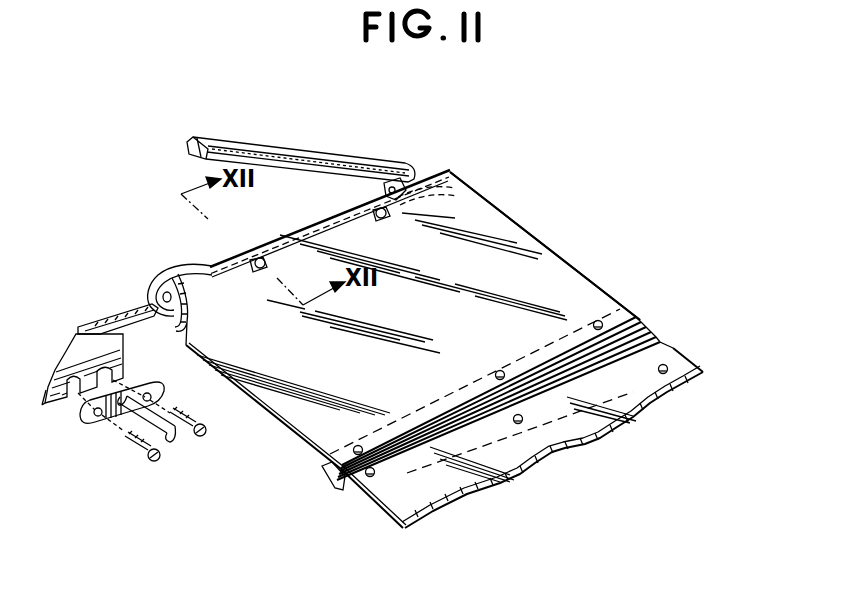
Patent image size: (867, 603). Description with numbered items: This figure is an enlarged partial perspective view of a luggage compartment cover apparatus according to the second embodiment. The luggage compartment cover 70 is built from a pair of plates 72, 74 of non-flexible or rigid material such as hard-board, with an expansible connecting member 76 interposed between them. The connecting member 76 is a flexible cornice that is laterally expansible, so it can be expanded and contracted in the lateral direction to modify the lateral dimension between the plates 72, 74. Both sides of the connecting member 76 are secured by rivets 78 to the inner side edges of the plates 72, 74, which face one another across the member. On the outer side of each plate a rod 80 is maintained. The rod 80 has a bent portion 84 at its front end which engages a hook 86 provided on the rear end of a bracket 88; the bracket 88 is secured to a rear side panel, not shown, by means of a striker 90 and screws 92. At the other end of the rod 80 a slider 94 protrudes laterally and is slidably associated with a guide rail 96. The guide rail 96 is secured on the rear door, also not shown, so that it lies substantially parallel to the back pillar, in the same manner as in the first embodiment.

The luggage compartment cover 70 is at (558, 241).
The plate 72 is at (483, 223).
The plate 74 is at (570, 434).
The expansible connecting member 76 is at (651, 331).
The rivets 78 is at (500, 368).
The rod 80 is at (326, 224).
The bent portion 84 is at (198, 322).
The hook 86 is at (164, 292).
The bracket 88 is at (88, 349).
The striker 90 is at (116, 426).
The screws 92 is at (188, 420).
The slider 94 is at (398, 178).
The guide rail 96 is at (322, 156).